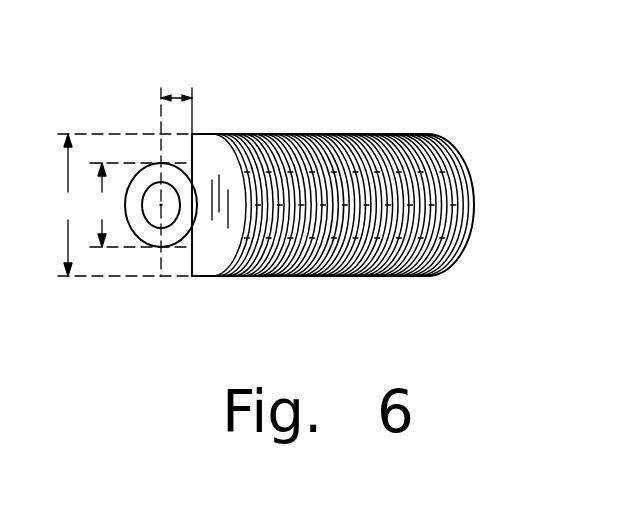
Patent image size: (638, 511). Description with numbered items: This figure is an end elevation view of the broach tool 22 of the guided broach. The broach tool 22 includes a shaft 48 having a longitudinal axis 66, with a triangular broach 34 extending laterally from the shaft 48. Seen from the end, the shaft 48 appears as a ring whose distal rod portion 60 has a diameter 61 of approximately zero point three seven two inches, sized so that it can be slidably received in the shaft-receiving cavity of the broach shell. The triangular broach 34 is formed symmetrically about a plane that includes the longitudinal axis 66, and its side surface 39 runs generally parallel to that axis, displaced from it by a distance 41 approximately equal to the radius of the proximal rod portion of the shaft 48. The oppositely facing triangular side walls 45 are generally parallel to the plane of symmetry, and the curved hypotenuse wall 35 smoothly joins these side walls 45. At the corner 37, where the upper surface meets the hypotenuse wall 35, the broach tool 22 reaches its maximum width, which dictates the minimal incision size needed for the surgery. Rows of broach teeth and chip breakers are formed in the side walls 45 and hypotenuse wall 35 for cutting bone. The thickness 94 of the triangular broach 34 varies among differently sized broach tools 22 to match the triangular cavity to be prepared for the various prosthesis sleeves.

The broach tool 22 is at (348, 105).
The triangular broach 34 is at (452, 227).
The hypotenuse wall 35 is at (443, 157).
The corner 37 is at (475, 206).
The side surface 39 is at (187, 274).
The distance 41 is at (173, 97).
The side walls 45 is at (292, 134).
The shaft 48 is at (137, 163).
The distal rod portion 60 is at (175, 248).
The diameter 61 is at (140, 205).
The longitudinal axis 66 is at (161, 206).
The thickness 94 is at (123, 205).